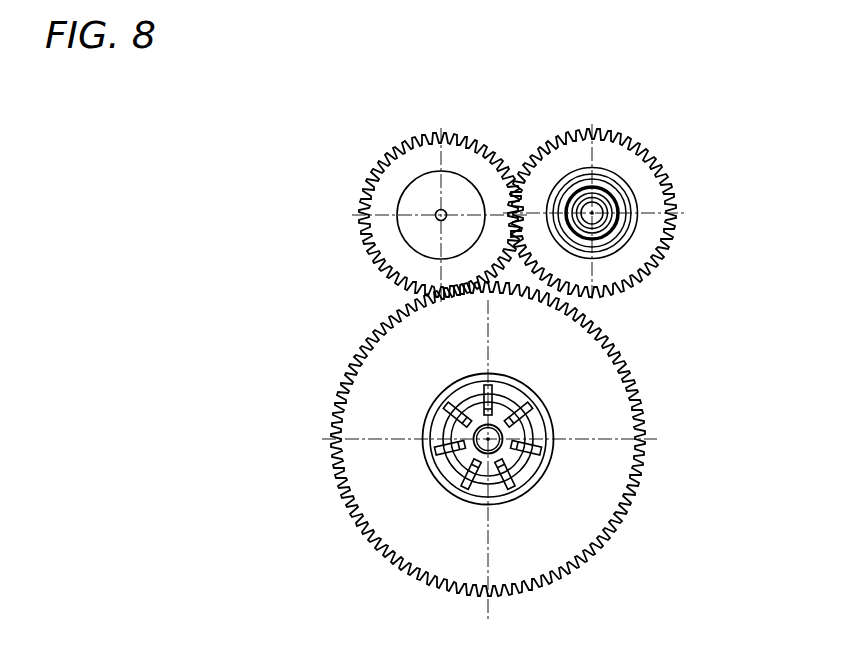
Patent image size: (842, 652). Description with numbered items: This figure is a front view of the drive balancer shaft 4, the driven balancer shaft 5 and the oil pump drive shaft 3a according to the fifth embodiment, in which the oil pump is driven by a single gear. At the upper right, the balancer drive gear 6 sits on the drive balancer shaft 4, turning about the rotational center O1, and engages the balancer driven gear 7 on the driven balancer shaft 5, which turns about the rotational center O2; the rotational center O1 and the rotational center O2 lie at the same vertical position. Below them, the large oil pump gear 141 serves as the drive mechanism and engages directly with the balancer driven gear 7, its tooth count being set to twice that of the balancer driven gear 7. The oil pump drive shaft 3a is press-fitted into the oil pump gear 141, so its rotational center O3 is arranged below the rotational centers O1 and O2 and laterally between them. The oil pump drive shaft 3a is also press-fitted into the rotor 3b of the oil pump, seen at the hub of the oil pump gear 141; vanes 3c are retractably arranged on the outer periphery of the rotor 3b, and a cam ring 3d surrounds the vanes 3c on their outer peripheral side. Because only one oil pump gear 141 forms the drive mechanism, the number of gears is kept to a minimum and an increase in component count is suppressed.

The balancer driven gear 7 is at (378, 161).
The driven balancer shaft 5 is at (452, 193).
The rotational center of the driven balancer shaft O2 is at (437, 210).
The balancer drive gear 6 is at (637, 146).
The drive balancer shaft 4 is at (612, 189).
The rotational center of the drive balancer shaft O1 is at (593, 214).
The oil pump gear 141 is at (633, 483).
The oil pump drive shaft 3a is at (455, 462).
The rotor 3b is at (485, 497).
The vanes 3c is at (463, 446).
The cam ring 3d is at (500, 500).
The rotational center of the oil pump drive shaft O3 is at (489, 440).